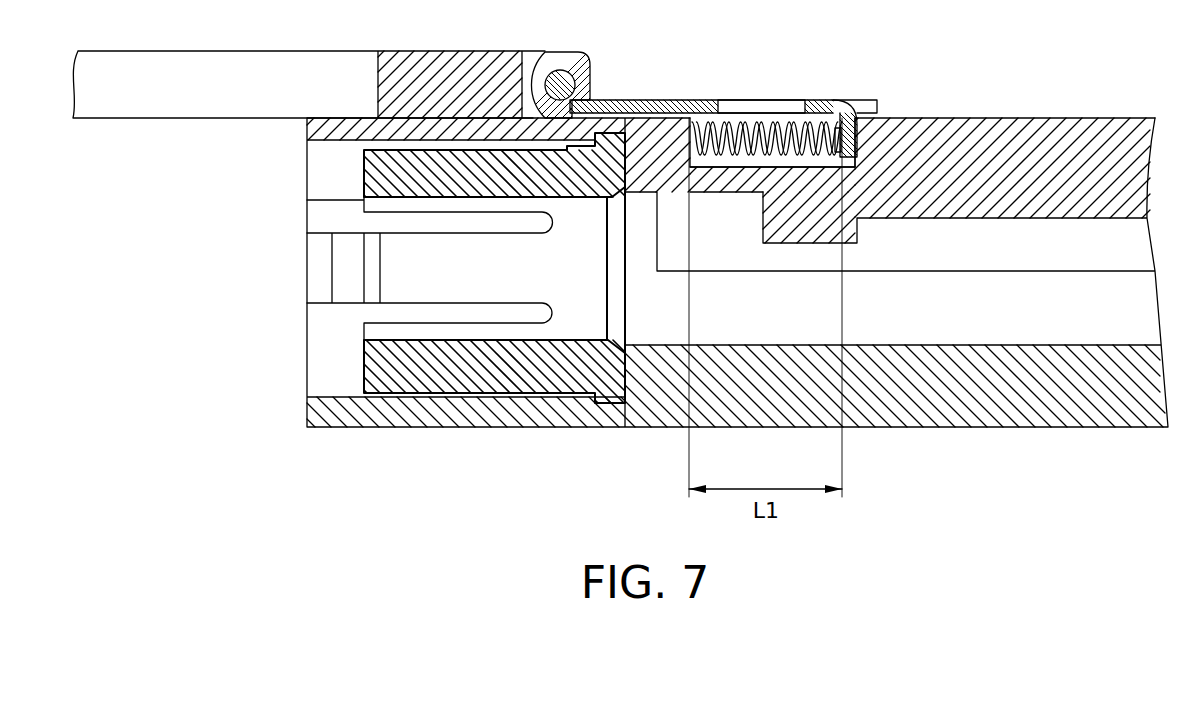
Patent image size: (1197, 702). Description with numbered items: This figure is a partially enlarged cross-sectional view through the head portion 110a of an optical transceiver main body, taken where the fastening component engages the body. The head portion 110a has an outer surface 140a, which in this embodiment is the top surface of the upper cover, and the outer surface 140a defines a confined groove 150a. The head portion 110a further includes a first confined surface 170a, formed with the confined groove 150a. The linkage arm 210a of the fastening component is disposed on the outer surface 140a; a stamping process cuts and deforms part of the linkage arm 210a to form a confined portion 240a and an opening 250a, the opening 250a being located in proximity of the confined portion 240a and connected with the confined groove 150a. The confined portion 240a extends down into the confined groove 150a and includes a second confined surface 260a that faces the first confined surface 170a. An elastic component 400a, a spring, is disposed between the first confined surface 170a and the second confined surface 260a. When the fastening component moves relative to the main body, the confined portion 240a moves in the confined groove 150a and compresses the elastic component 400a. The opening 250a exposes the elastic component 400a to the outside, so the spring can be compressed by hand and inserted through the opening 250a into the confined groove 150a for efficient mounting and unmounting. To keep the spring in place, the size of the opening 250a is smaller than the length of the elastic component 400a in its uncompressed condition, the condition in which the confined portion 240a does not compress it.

The head portion 110a is at (888, 410).
The outer surface 140a is at (1097, 118).
The confined groove 150a is at (780, 170).
The first confined surface 170a is at (694, 158).
The linkage arm 210a is at (653, 108).
The confined portion 240a is at (857, 143).
The opening 250a is at (748, 88).
The second confined surface 260a is at (838, 147).
The elastic component 400a is at (777, 128).